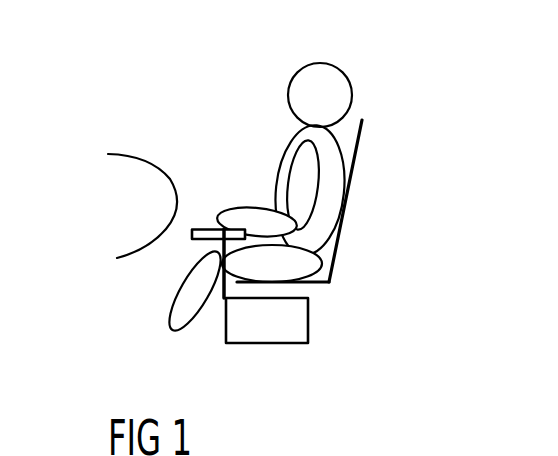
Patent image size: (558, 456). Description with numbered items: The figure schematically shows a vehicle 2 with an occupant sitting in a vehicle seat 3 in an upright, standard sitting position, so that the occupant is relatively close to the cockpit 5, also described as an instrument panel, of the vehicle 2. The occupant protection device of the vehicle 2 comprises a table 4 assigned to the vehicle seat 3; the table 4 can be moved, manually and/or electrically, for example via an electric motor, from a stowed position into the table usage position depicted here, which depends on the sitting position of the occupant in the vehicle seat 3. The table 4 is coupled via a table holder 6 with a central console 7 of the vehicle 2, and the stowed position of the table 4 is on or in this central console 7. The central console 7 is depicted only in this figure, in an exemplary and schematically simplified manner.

The vehicle 2 is at (477, 126).
The vehicle seat 3 is at (332, 280).
The table 4 is at (193, 239).
The cockpit 5 is at (122, 205).
The table holder 6 is at (220, 295).
The central console 7 is at (292, 320).